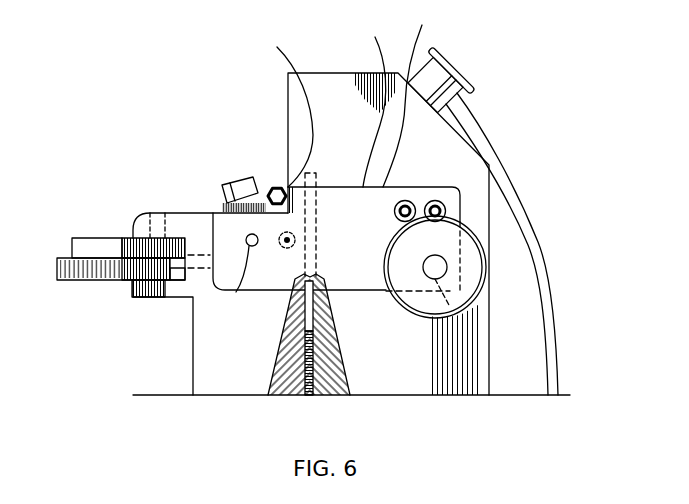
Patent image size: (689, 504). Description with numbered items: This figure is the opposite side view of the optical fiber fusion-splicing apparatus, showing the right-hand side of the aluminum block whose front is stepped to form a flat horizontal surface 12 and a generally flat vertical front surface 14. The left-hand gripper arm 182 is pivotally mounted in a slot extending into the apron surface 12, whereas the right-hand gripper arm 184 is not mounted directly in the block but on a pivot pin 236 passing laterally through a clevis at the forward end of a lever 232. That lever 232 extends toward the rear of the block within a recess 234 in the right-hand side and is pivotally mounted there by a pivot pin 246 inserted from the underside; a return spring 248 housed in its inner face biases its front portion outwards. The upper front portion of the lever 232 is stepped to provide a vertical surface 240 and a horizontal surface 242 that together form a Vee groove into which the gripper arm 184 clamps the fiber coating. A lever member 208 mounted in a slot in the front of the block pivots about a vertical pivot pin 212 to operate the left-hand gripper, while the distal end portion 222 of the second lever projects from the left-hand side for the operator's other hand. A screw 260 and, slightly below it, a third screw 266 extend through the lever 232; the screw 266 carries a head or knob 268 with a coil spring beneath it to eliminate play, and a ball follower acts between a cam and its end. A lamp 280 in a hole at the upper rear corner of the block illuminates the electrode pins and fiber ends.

The flat horizontal surface 12 is at (184, 212).
The vertical front surface 14 is at (288, 105).
The gripper arm 182 is at (223, 203).
The gripper arm 184 is at (277, 193).
The lever member 208 is at (103, 283).
The pivot pin 212 is at (157, 298).
The distal end portion 222 is at (93, 238).
The lever 232 is at (370, 100).
The recess 234 is at (416, 95).
The pivot pin 236 is at (236, 292).
The vertical surface 240 is at (272, 107).
The horizontal surface 242 is at (214, 211).
The pivot pin 246 is at (313, 173).
The return spring 248 is at (290, 248).
The screw 260 is at (457, 193).
The third screw 266 is at (447, 262).
The head or knob 268 is at (410, 318).
The lamp 280 is at (466, 77).